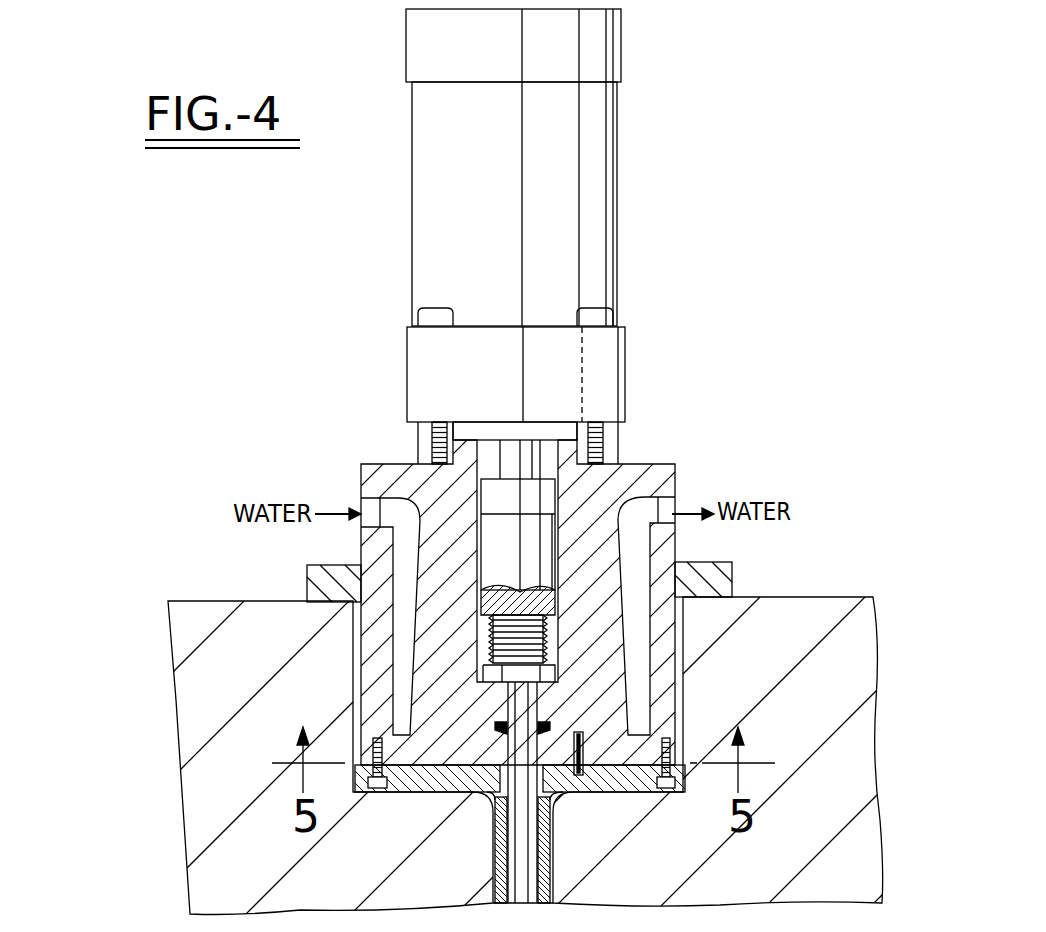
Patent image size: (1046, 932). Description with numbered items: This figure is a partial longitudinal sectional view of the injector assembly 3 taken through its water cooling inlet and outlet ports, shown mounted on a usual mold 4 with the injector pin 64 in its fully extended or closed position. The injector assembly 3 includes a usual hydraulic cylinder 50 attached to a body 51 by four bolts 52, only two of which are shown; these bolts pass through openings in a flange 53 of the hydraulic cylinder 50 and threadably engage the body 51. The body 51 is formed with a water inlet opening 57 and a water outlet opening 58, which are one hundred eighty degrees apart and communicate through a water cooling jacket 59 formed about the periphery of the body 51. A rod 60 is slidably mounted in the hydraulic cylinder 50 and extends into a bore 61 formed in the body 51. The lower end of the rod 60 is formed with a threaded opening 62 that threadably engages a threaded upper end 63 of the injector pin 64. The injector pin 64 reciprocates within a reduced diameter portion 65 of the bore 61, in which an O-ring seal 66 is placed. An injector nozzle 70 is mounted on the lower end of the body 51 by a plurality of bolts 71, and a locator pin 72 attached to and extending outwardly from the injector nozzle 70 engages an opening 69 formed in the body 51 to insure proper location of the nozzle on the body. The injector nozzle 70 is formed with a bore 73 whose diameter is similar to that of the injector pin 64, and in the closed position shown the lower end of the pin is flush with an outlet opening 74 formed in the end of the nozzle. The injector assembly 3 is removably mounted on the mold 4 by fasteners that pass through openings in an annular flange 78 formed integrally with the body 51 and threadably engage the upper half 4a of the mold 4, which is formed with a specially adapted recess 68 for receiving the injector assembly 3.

The injector assembly 3 is at (683, 463).
The mold 4 is at (210, 602).
The upper half of mold 4a is at (168, 604).
The hydraulic cylinder 50 is at (618, 163).
The body 51 is at (688, 462).
The bolts 52 is at (430, 308).
The flange 53 is at (625, 350).
The water inlet opening 57 is at (363, 498).
The water outlet opening 58 is at (668, 498).
The water cooling jacket 59 is at (405, 668).
The rod 60 is at (532, 562).
The bore 61 is at (562, 463).
The threaded opening 62 is at (543, 640).
The threaded upper end 63 is at (493, 625).
The injector pin 64 is at (528, 837).
The reduced diameter portion 65 is at (500, 687).
The O-ring seal 66 is at (552, 715).
The recess 68 is at (361, 706).
The opening 69 is at (590, 770).
The injector nozzle 70 is at (475, 800).
The bolts 71 is at (378, 797).
The locator pin 72 is at (578, 733).
The bore 73 is at (540, 863).
The outlet opening 74 is at (513, 903).
The annular flange 78 is at (732, 575).